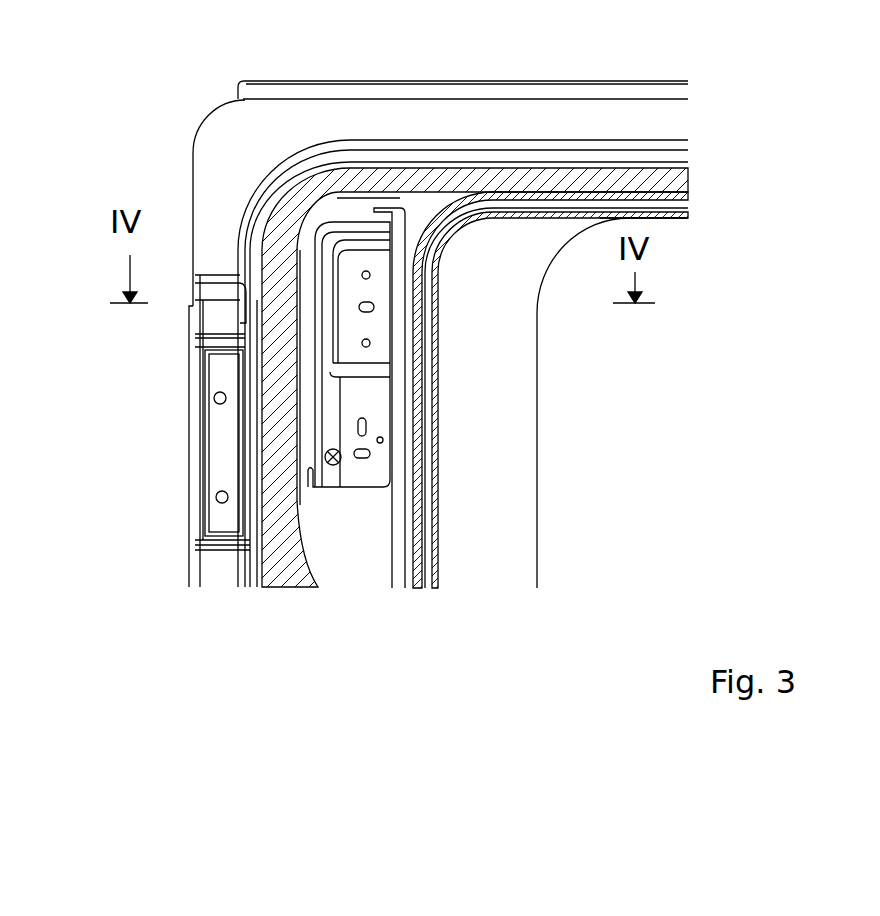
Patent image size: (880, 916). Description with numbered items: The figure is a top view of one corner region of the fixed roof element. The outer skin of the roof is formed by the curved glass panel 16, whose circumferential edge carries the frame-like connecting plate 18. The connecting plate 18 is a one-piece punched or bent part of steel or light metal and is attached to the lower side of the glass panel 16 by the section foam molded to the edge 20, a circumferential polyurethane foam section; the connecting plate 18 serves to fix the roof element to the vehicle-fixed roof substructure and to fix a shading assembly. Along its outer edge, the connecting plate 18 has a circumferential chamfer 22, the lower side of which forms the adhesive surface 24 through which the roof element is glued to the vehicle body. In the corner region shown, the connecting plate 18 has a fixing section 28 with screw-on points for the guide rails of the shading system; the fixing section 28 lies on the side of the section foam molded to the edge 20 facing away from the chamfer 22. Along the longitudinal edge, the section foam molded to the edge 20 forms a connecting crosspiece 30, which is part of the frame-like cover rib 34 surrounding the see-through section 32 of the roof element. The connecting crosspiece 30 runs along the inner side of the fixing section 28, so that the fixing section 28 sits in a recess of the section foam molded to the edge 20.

The glass panel 16 is at (528, 385).
The connecting plate 18 is at (228, 149).
The section foam molded to the edge 20 is at (430, 187).
The chamfer 22 is at (200, 577).
The adhesive surface 24 is at (575, 122).
The fixing section 28 is at (350, 267).
The connecting crosspiece 30 is at (572, 390).
The see-through section 32 is at (660, 257).
The cover rib 34 is at (427, 478).